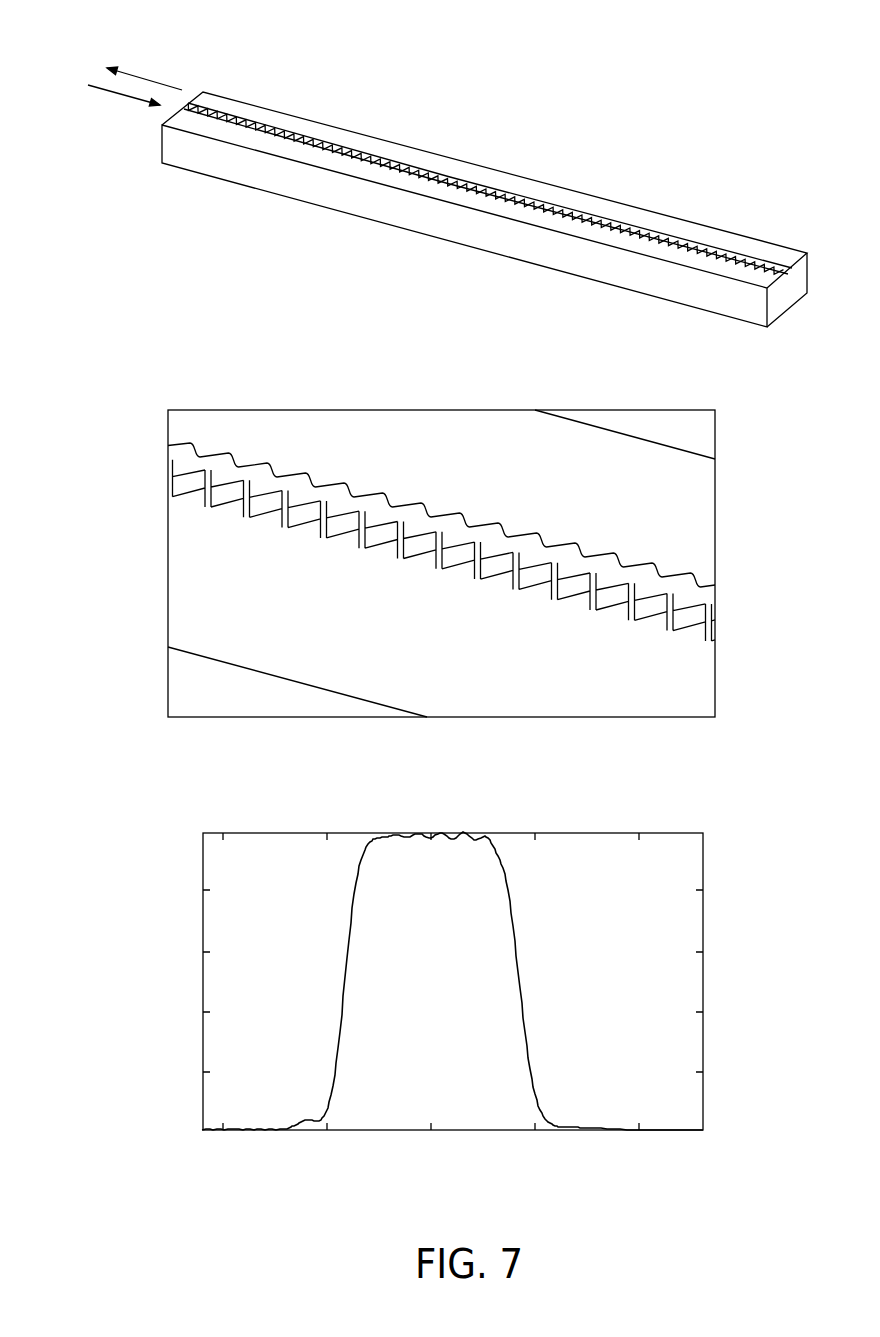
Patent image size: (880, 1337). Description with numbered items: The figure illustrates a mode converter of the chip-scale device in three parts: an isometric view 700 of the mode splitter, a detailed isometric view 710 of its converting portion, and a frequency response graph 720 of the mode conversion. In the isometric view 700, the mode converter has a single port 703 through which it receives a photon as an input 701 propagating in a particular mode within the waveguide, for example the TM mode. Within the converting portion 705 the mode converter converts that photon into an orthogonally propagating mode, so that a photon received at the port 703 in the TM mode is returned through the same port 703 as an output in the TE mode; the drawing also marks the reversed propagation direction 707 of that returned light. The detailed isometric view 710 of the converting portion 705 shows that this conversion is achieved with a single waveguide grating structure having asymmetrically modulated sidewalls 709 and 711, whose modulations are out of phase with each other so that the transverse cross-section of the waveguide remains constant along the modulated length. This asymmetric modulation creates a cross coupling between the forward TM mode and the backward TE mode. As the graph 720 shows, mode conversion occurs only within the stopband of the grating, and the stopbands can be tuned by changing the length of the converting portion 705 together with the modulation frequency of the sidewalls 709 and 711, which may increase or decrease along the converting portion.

The isometric view 700 is at (587, 108).
The input 701 is at (95, 88).
The port 703 is at (223, 113).
The converting portion 705 is at (448, 182).
The reflected light propagation direction 707 is at (135, 70).
The asymmetrically modulated sidewall 709 is at (186, 445).
The detailed isometric view 710 is at (98, 410).
The asymmetrically modulated sidewall 711 is at (172, 495).
The frequency response graph 720 is at (143, 822).